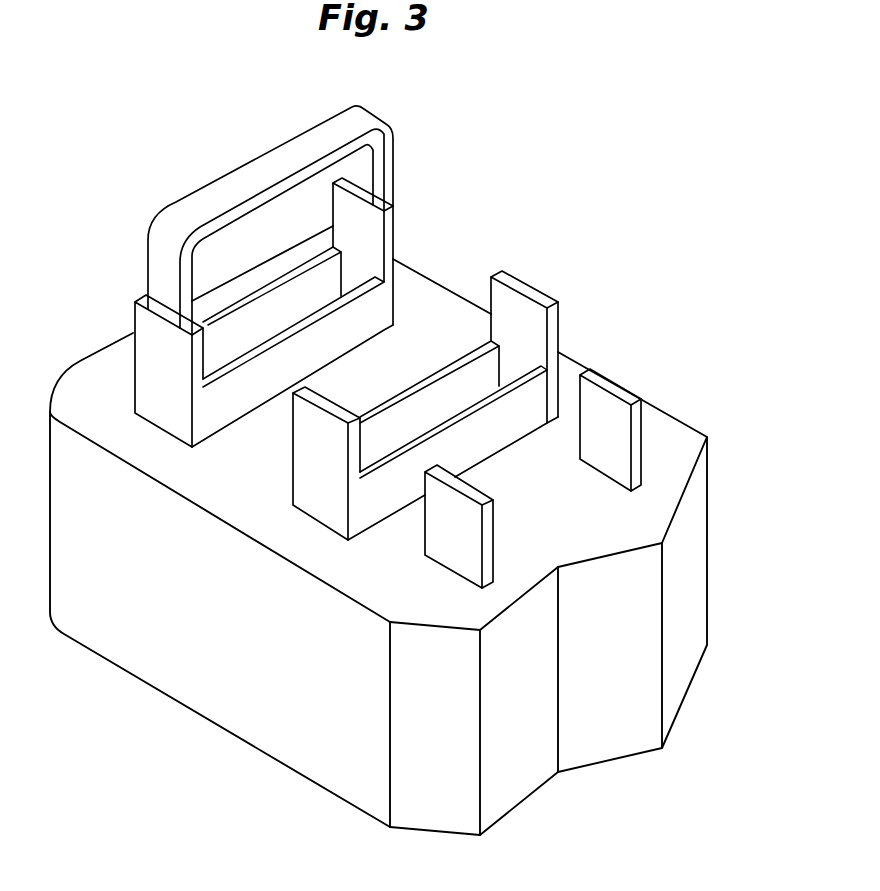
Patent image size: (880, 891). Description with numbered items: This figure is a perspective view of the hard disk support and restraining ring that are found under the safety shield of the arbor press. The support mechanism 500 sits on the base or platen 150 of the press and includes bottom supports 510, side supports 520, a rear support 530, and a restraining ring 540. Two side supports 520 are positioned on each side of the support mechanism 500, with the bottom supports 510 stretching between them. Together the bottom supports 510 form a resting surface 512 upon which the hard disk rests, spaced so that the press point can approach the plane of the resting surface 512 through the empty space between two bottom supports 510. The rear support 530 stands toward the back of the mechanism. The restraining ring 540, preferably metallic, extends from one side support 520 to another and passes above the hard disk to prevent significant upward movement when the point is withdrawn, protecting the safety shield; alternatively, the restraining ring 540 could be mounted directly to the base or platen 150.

The base or platen 150 is at (178, 676).
The support mechanism 500 is at (602, 186).
The bottom support 510 is at (374, 312).
The resting surface 512 is at (332, 305).
The side support 520 is at (380, 221).
The rear support 530 is at (618, 418).
The restraining ring 540 is at (355, 118).